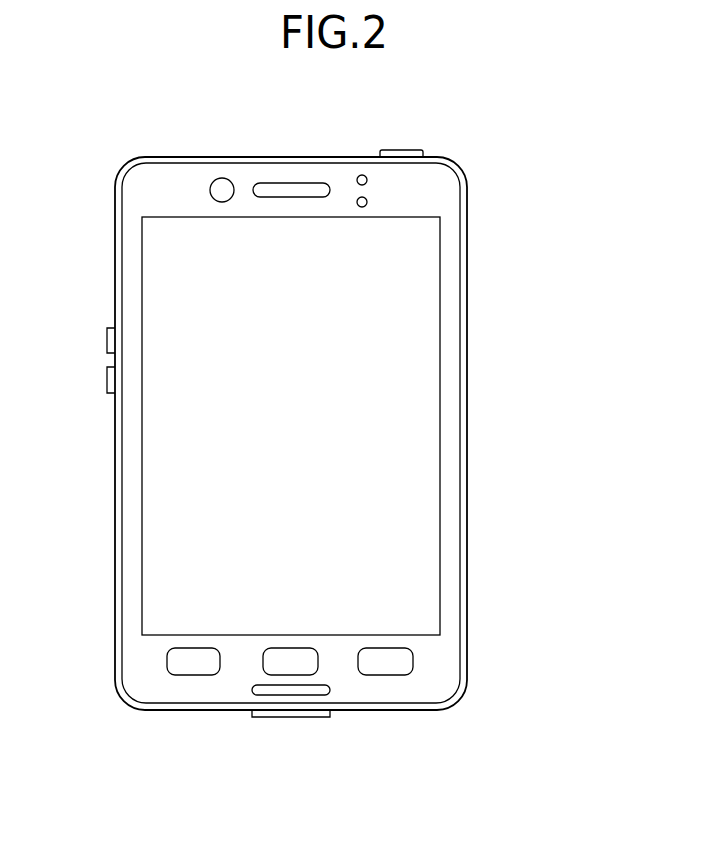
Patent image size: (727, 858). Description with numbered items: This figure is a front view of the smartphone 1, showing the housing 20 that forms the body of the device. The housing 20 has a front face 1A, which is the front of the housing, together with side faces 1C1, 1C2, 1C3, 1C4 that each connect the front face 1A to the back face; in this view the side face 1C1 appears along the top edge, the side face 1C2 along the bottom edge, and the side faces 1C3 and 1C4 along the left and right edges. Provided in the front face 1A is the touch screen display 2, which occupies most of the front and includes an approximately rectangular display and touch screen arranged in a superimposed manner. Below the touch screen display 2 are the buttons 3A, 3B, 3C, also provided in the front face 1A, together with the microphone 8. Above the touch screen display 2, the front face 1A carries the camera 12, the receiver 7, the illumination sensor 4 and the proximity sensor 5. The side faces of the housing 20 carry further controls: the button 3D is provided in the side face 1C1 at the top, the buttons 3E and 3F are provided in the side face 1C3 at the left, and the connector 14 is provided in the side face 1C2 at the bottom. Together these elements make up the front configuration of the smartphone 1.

The smartphone 1 is at (455, 124).
The front face 1A is at (128, 494).
The side face 1C1 is at (253, 157).
The side face 1C2 is at (150, 712).
The side face 1C3 is at (112, 567).
The side face 1C4 is at (467, 517).
The touch screen display 2 is at (375, 378).
The button 3A is at (193, 676).
The button 3B is at (263, 662).
The button 3C is at (387, 676).
The button 3D is at (400, 148).
The button 3E is at (107, 341).
The button 3F is at (107, 378).
The illumination sensor 4 is at (362, 175).
The proximity sensor 5 is at (368, 202).
The receiver 7 is at (288, 183).
The microphone 8 is at (328, 690).
The camera 12 is at (218, 178).
The connector 14 is at (290, 718).
The housing 20 is at (115, 291).